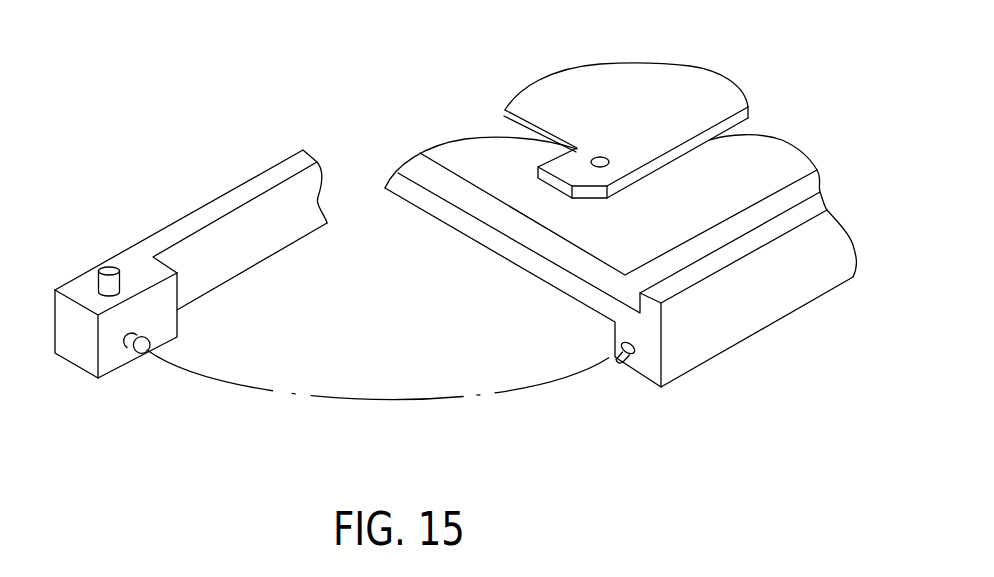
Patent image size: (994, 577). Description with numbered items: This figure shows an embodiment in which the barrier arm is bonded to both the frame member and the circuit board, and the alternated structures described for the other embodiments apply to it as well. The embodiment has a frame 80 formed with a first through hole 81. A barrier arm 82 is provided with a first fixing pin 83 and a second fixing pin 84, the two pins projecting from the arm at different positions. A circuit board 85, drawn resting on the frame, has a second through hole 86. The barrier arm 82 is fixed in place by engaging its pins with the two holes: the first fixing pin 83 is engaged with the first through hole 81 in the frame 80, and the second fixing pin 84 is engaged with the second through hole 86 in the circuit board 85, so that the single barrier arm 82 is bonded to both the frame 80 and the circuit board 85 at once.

The frame 80 is at (778, 306).
The first through hole 81 is at (625, 362).
The barrier arm 82 is at (222, 180).
The first fixing pin 83 is at (142, 350).
The second fixing pin 84 is at (112, 267).
The circuit board 85 is at (585, 88).
The second through hole 86 is at (603, 157).